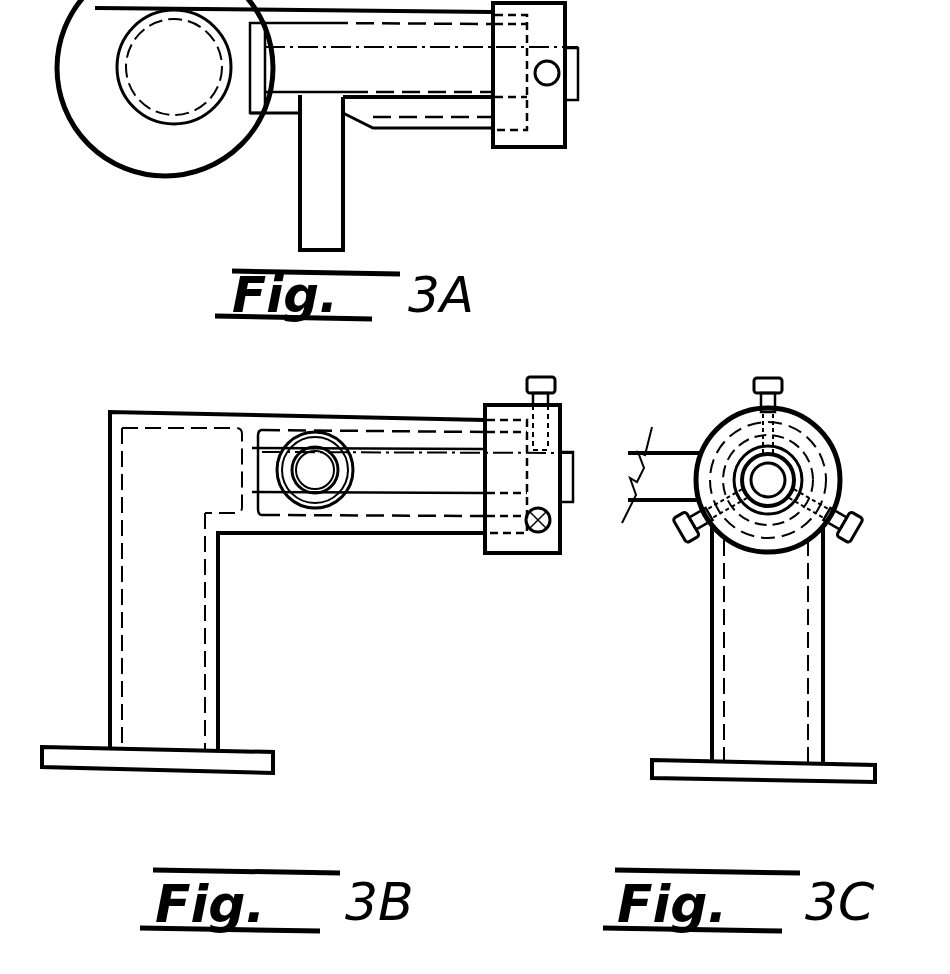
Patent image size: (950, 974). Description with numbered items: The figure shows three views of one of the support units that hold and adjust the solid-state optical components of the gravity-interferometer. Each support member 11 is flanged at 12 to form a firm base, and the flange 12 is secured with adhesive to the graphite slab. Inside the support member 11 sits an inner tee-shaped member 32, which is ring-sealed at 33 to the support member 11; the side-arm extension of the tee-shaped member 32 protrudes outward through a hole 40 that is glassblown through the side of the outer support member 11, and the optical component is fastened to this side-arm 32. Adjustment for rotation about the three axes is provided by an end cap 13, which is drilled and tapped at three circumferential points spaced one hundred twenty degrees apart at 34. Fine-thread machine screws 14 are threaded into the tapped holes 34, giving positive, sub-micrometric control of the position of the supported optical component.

In FIG. 3C, the support member 11 is at (827, 627).
In FIG. 3A, the flange 12 is at (155, 180).
In FIG. 3A, the end cap 13 is at (535, 150).
In FIG. 3B, the adjustment fine-thread machine screw 14 is at (545, 374).
In FIG. 3C, the adjustment fine-thread machine screw 14 is at (768, 415).
In FIG. 3A, the tee-shaped member 32 is at (347, 190).
In FIG. 3B, the ring seal 33 is at (247, 505).
In FIG. 3B, the tapped hole 34 is at (562, 430).
In FIG. 3B, the hole 40 is at (323, 433).